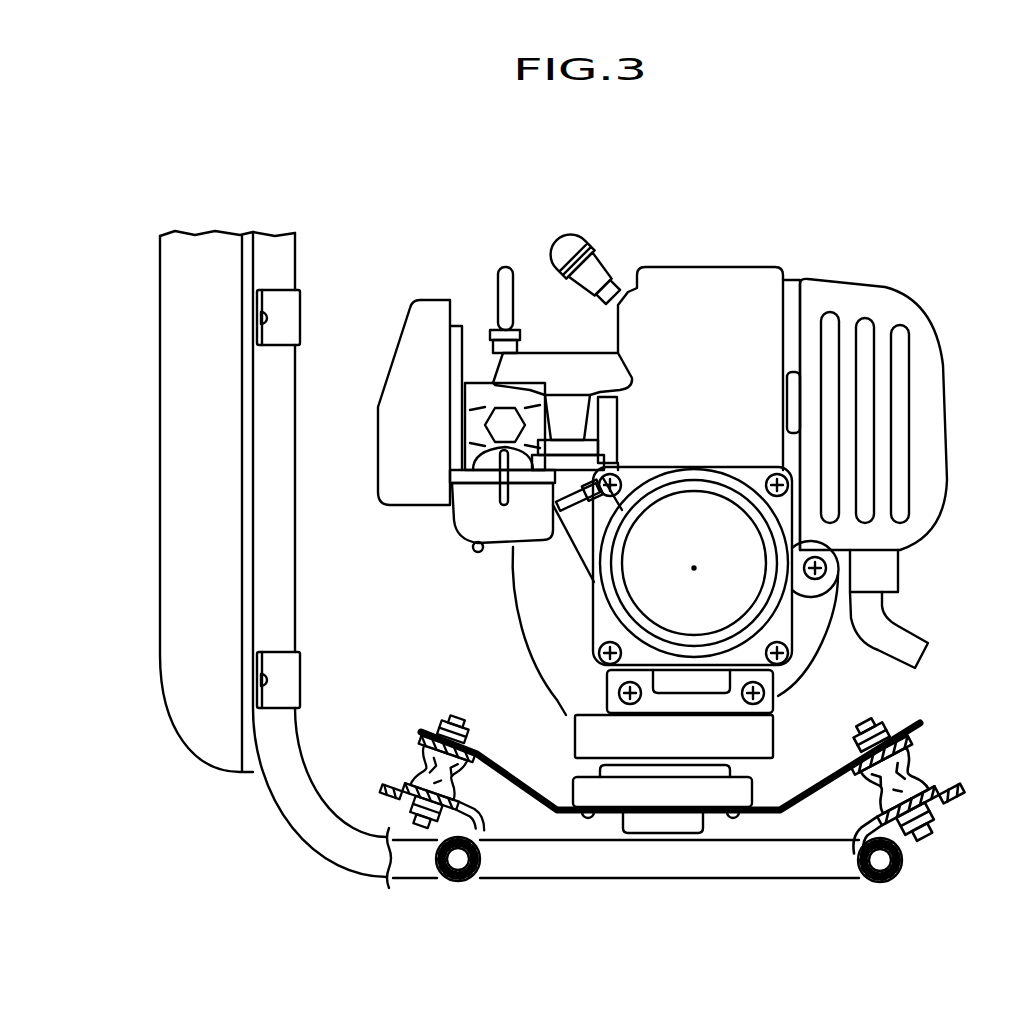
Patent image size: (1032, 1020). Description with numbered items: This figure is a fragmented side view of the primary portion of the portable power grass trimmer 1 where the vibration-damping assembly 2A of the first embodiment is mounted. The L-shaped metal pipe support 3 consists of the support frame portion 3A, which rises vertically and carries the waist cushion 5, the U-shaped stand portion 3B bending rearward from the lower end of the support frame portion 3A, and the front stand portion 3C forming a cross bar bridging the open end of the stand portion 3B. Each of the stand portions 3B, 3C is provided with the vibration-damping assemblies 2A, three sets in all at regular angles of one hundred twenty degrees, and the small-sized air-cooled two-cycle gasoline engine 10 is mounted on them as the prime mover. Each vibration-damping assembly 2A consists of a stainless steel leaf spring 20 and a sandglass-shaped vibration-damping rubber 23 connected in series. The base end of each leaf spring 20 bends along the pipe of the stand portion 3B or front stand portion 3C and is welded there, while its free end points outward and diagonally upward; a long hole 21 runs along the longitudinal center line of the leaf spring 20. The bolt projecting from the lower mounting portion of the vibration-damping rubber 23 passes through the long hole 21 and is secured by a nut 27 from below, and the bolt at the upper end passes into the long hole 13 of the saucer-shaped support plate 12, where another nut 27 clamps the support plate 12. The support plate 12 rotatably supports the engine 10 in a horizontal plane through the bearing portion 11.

The portable power grass trimmer 1 is at (548, 222).
The vibration-damping assembly 2A is at (441, 736).
The support 3 is at (297, 258).
The support frame portion 3A is at (288, 578).
The stand portion 3B is at (762, 868).
The front stand portion 3C is at (457, 882).
The waist cushion 5 is at (182, 469).
The engine 10 is at (808, 280).
The bearing portion 11 is at (582, 792).
The support plate 12 is at (803, 796).
The long hole 13 is at (459, 752).
The leaf spring 20 is at (390, 788).
The long hole 21 is at (401, 788).
The vibration-damping rubber 23 is at (421, 765).
The nut 27 is at (464, 731).